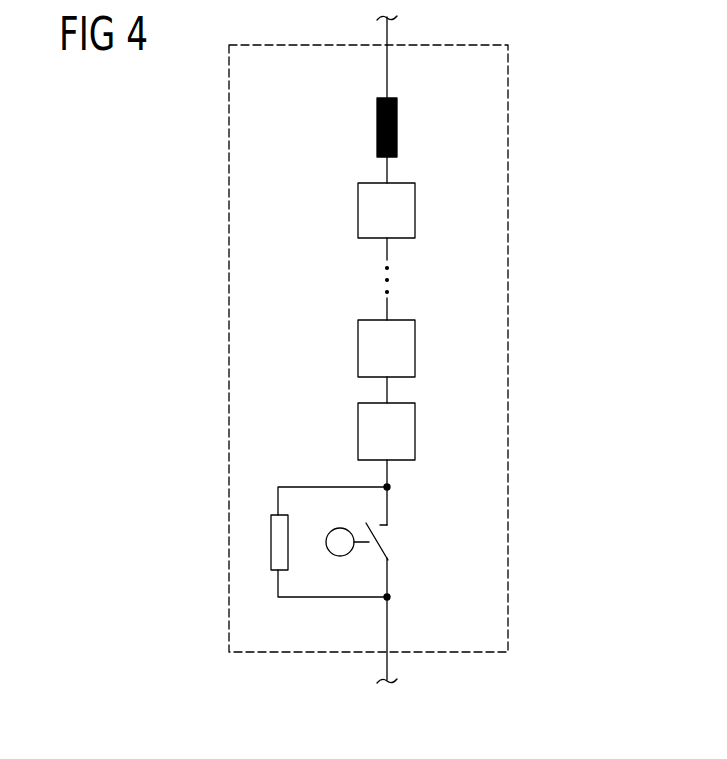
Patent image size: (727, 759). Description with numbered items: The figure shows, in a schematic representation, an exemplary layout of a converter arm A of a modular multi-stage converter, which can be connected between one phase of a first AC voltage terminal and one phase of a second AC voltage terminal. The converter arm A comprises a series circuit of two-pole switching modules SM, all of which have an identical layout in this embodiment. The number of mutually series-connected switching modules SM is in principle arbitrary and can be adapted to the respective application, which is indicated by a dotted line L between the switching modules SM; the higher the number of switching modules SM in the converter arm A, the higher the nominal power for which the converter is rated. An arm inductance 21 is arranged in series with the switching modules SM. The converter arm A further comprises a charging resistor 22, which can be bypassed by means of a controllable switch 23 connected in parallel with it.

The arm inductance 21 is at (397, 130).
The switching module SM is at (415, 210).
The dotted line L is at (388, 280).
The charging resistor 22 is at (271, 542).
The controllable switch 23 is at (388, 540).
The converter arm A is at (508, 608).